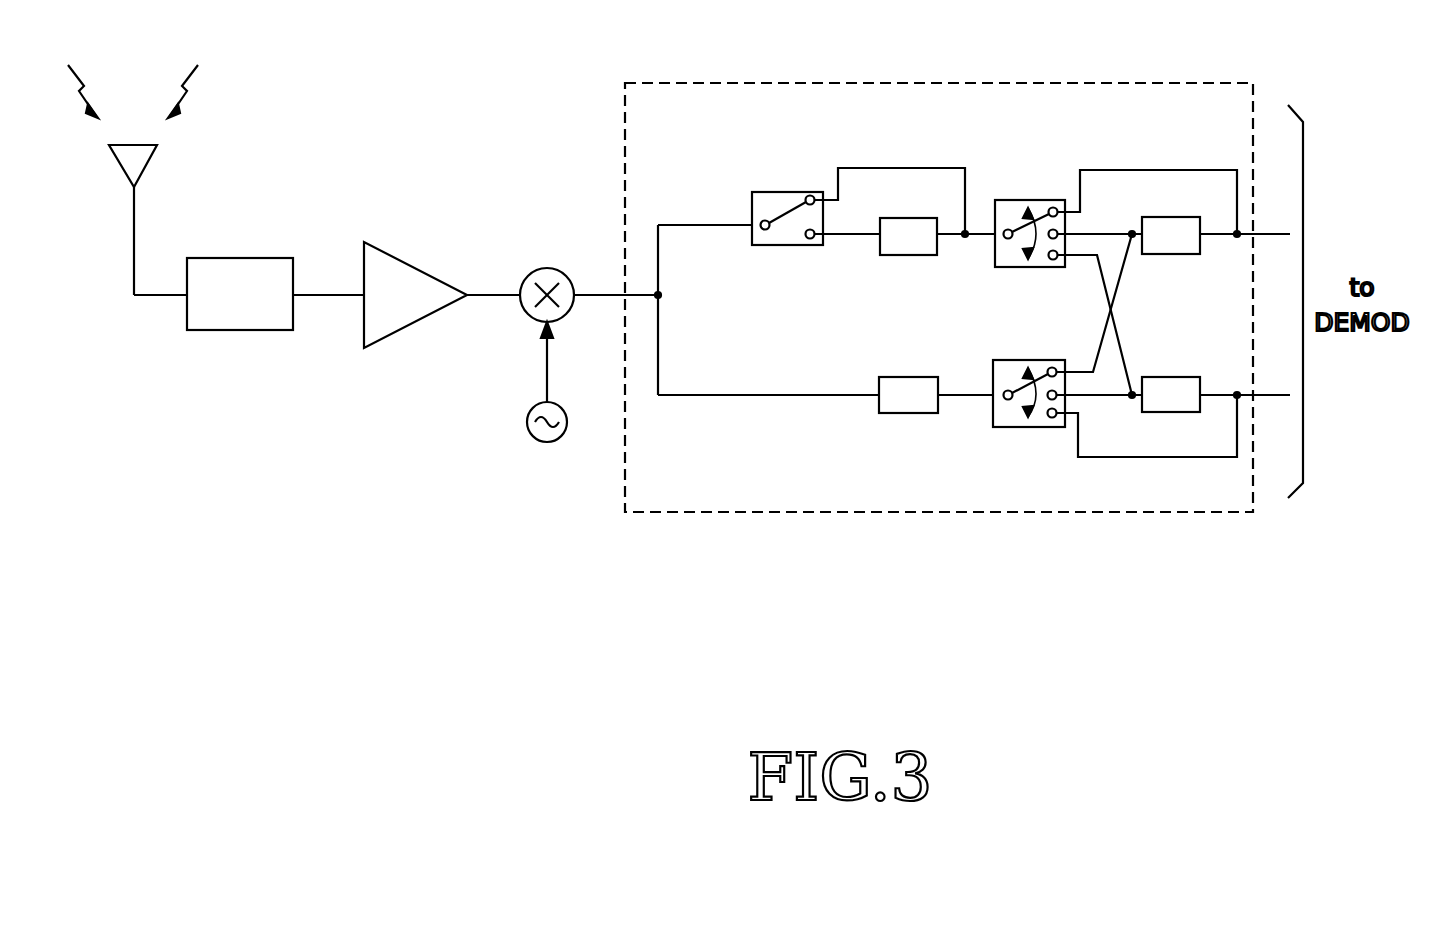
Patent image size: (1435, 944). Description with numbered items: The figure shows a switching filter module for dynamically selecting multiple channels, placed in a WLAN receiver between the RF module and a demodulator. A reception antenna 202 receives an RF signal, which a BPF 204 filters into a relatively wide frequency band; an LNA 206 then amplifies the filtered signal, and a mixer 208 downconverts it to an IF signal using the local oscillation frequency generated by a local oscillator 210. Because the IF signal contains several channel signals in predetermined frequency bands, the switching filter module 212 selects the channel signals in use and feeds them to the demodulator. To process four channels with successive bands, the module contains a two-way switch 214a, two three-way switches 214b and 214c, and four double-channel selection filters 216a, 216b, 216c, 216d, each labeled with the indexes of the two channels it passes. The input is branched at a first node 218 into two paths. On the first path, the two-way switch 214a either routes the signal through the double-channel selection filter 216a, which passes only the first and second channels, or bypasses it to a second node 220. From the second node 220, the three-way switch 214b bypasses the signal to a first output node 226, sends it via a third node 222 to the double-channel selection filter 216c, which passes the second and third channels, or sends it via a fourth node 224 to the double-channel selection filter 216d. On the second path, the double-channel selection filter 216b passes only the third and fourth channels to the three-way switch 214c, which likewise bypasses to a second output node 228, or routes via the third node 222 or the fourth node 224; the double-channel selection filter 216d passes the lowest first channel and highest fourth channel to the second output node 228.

The reception antenna 202 is at (134, 145).
The BPF 204 is at (238, 258).
The LNA 206 is at (418, 265).
The mixer 208 is at (547, 268).
The local oscillator 210 is at (547, 443).
The switching filter module 212 is at (940, 83).
The 2-way switch 214a is at (785, 192).
The 3-way switch 214b is at (1022, 200).
The 3-way switch 214c is at (1023, 360).
The double-channel selection filter 216a is at (885, 218).
The double-channel selection filter 216b is at (900, 377).
The double-channel selection filter 216c is at (1152, 217).
The double-channel selection filter 216d is at (1160, 377).
The first node 218 is at (665, 300).
The second node 220 is at (965, 238).
The third node 222 is at (1127, 230).
The fourth node 224 is at (1125, 400).
The first output node 226 is at (1237, 240).
The second output node 228 is at (1232, 398).